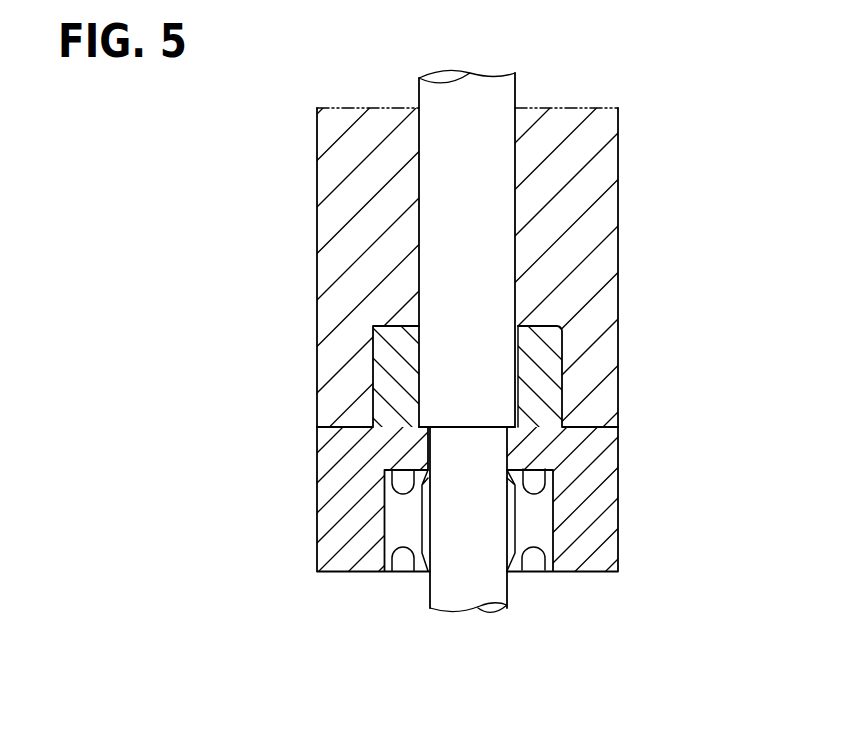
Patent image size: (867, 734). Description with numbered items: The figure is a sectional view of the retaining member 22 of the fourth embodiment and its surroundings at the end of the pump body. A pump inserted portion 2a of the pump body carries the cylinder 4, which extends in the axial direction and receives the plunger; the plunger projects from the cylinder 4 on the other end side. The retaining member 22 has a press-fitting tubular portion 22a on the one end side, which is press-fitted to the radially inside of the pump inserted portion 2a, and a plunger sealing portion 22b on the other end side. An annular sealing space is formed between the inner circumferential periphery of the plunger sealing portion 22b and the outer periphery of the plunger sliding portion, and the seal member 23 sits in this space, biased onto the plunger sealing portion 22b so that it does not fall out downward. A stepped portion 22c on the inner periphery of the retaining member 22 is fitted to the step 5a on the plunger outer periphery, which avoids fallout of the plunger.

The cylinder hole 4 is at (514, 134).
The pump inserted portion 2a is at (587, 180).
The step 5a is at (480, 428).
The retaining member 22 is at (312, 458).
The press-fitting tubular portion 22a is at (390, 357).
The plunger sealing portion 22b is at (373, 513).
The stepped portion 22c is at (513, 428).
The seal member 23 is at (403, 526).